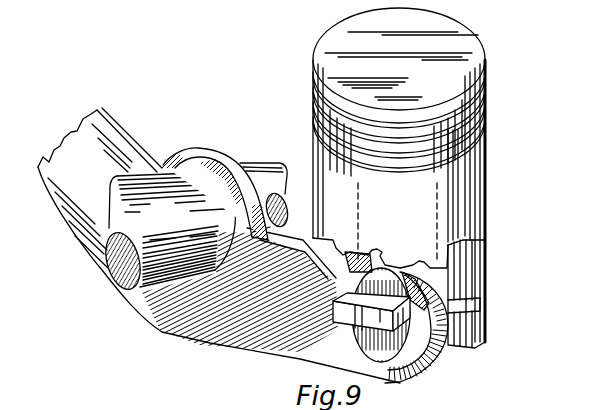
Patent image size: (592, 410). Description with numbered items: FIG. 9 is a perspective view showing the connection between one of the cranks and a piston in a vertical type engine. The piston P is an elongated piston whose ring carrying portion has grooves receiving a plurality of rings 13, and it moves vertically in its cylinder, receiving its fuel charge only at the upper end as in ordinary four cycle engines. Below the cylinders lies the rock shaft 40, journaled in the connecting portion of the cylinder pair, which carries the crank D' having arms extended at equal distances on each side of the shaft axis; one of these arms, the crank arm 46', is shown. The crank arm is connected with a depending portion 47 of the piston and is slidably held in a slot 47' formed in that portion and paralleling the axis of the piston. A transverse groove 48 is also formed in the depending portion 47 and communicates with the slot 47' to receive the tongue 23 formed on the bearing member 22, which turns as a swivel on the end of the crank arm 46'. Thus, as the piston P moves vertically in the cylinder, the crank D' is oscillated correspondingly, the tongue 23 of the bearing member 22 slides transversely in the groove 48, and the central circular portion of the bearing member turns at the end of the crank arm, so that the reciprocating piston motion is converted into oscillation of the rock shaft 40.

The rings 13 is at (474, 130).
The piston P is at (399, 175).
The depending portion 47 is at (483, 223).
The slot 47' is at (487, 270).
The transverse groove 48 is at (480, 308).
The crank arm 46' is at (487, 329).
The rock shaft 40 is at (184, 220).
The crank D' is at (219, 245).
The tongue 23 is at (333, 308).
The bearing member 22 is at (352, 340).